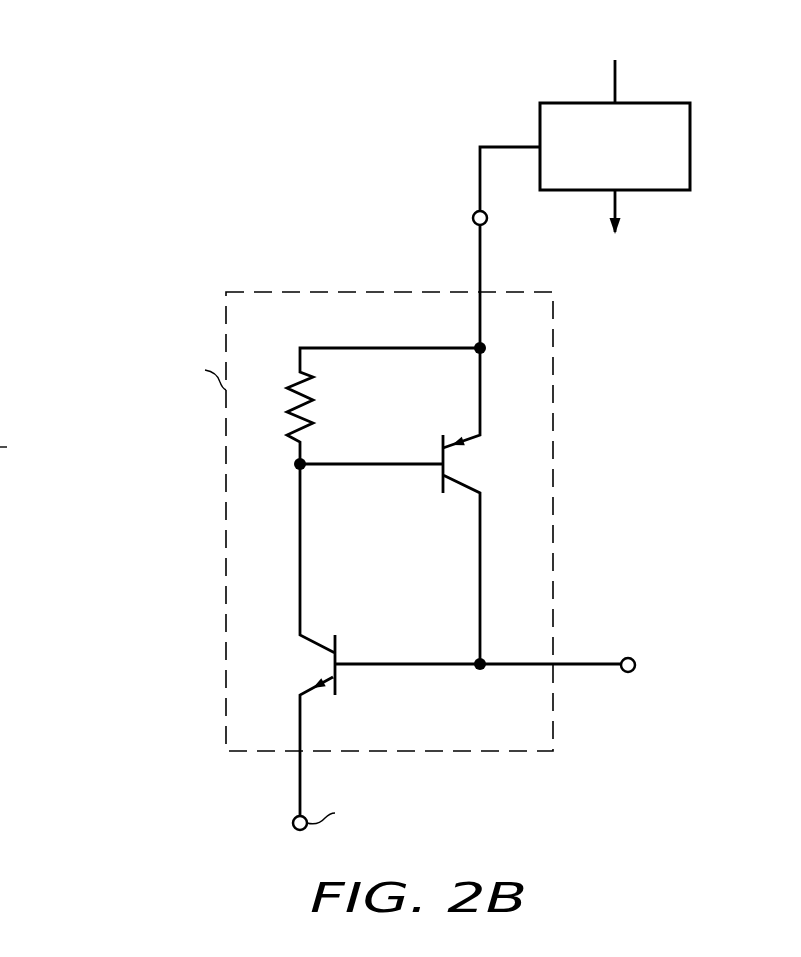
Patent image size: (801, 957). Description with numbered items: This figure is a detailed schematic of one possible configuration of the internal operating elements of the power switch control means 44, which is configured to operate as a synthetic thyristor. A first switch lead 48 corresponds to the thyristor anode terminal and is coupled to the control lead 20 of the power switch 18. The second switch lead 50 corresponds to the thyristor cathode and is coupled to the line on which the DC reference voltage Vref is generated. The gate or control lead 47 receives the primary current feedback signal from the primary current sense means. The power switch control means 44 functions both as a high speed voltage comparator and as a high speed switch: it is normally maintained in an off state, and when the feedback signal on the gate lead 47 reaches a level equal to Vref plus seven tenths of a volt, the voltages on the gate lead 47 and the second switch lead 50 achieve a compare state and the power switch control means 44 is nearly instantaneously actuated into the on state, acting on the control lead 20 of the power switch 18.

The power switch 18 is at (572, 102).
The control lead 20 is at (495, 146).
The power switch control means 44 is at (300, 292).
The gate or control lead 47 is at (624, 658).
The first switch lead 48 is at (474, 212).
The second switch lead 50 is at (293, 829).